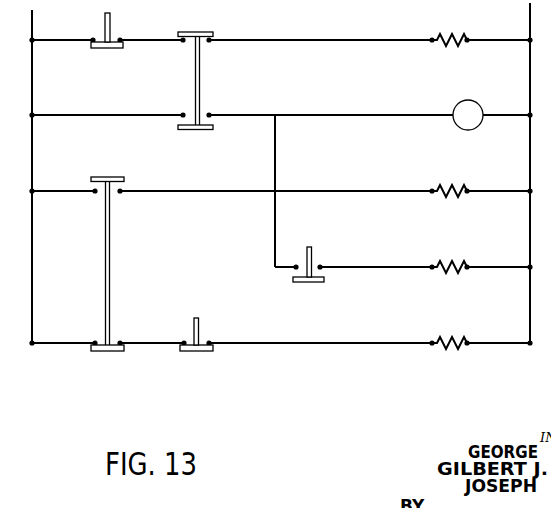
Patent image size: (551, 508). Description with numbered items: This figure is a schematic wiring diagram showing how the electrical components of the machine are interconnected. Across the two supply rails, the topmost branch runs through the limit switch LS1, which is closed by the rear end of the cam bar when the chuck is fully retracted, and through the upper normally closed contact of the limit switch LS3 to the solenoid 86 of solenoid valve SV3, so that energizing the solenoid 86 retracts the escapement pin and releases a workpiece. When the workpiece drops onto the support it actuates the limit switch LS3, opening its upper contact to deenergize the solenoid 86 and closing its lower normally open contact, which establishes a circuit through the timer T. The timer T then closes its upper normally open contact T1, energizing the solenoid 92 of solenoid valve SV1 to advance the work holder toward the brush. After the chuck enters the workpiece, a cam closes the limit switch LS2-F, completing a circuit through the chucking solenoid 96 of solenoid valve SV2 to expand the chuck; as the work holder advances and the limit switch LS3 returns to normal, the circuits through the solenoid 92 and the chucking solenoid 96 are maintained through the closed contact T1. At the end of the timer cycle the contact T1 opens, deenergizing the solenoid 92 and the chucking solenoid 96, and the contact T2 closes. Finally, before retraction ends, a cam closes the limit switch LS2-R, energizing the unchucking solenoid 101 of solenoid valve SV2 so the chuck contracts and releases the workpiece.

The solenoid 86 is at (463, 36).
The solenoid 92 is at (457, 186).
The chucking solenoid 96 is at (453, 263).
The unchucking solenoid 101 is at (443, 352).
The limit switch LS1 is at (104, 22).
The limit switch LS3 is at (213, 33).
The upper normally open contact of timer T1 is at (104, 177).
The timer contact T2 is at (107, 352).
The limit switch LS2-F is at (313, 283).
The limit switch LS2-R is at (203, 353).
The timer T is at (468, 115).